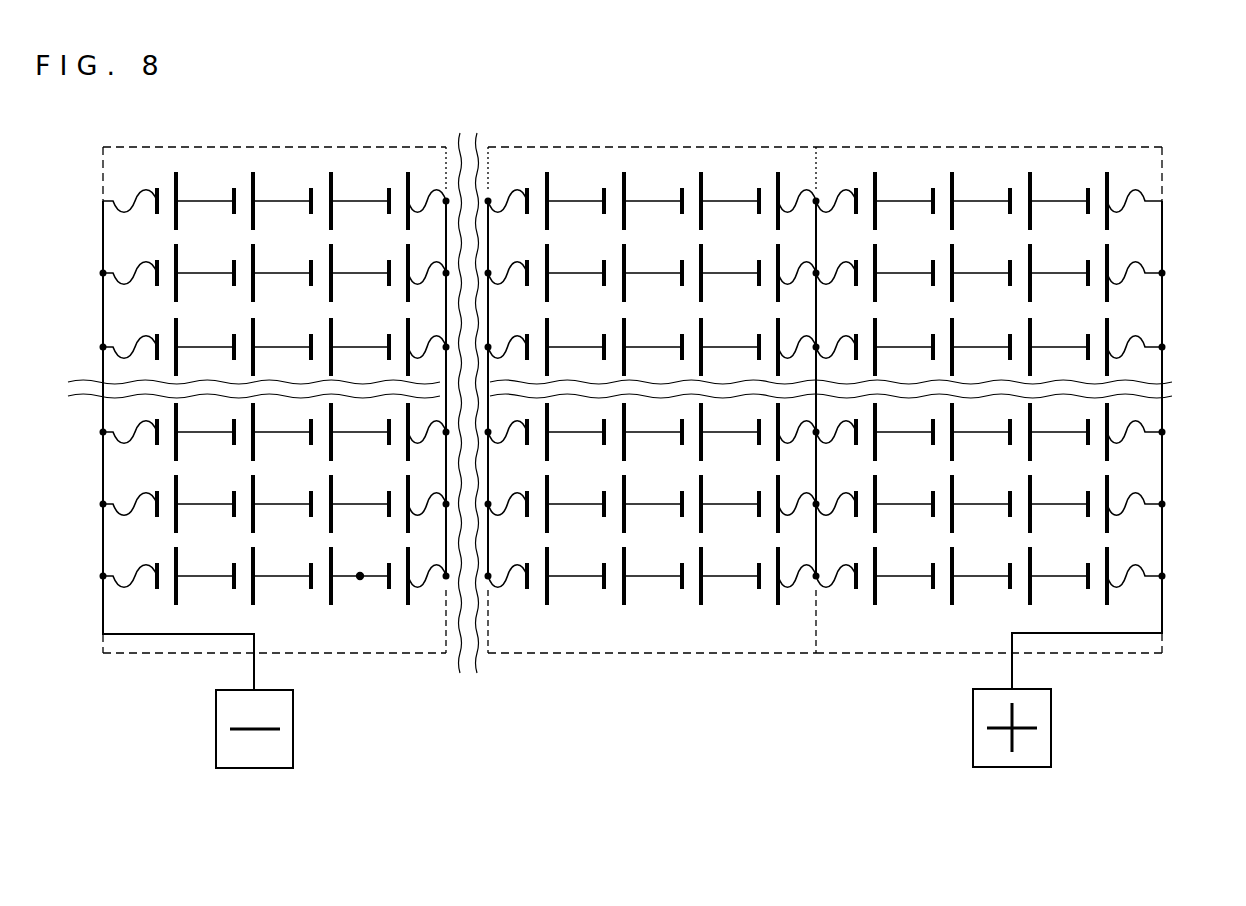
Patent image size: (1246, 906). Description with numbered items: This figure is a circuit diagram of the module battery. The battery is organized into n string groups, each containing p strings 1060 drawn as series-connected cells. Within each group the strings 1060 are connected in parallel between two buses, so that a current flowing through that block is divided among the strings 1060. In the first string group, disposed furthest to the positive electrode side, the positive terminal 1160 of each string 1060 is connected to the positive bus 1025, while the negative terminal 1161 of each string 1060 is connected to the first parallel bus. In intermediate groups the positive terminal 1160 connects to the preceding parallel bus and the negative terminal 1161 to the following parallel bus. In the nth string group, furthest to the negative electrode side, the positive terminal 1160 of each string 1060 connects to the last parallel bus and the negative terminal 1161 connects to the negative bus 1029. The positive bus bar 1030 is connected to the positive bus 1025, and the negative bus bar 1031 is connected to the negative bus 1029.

The positive bus 1025 is at (1162, 237).
The negative bus 1029 is at (103, 225).
The string 1060 is at (985, 273).
The positive terminal 1160 is at (1162, 273).
The negative terminal 1161 is at (816, 273).
The positive bus bar 1030 is at (1051, 745).
The negative bus bar 1031 is at (293, 745).